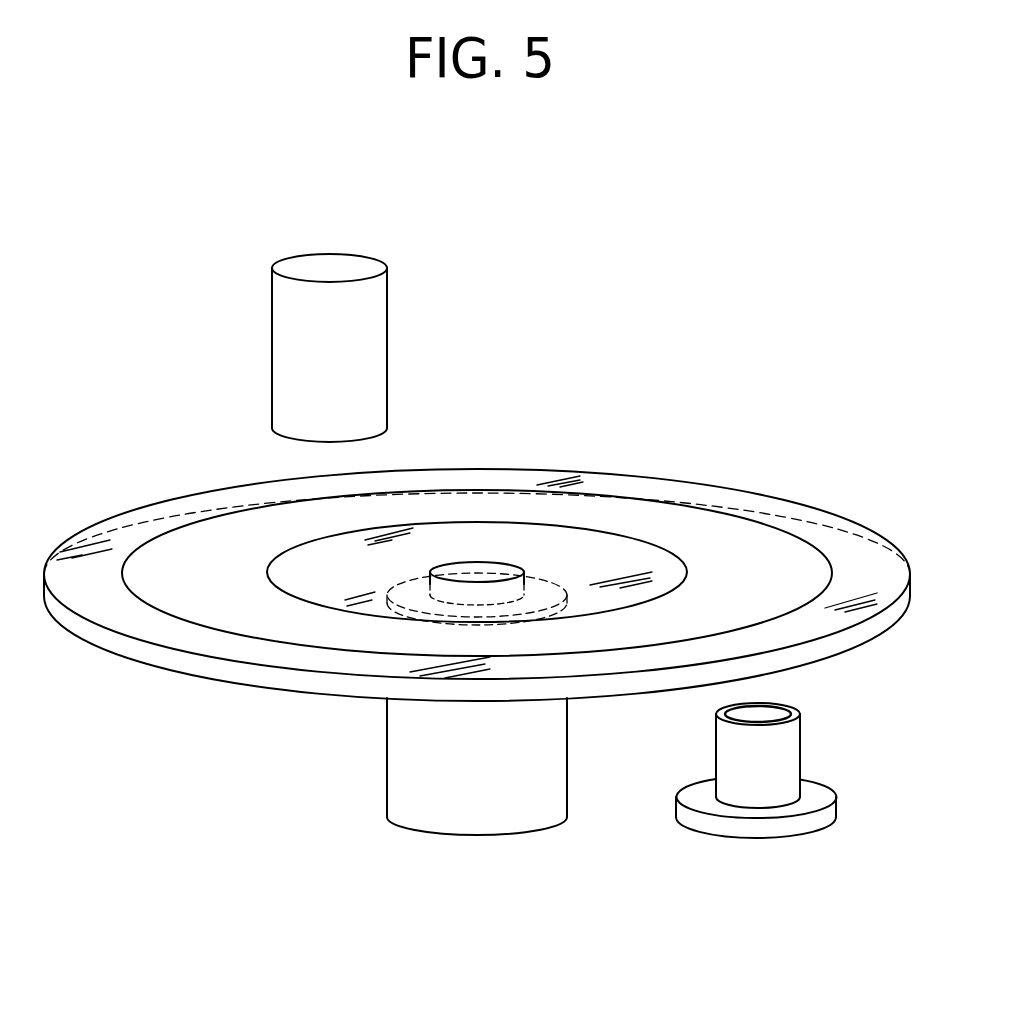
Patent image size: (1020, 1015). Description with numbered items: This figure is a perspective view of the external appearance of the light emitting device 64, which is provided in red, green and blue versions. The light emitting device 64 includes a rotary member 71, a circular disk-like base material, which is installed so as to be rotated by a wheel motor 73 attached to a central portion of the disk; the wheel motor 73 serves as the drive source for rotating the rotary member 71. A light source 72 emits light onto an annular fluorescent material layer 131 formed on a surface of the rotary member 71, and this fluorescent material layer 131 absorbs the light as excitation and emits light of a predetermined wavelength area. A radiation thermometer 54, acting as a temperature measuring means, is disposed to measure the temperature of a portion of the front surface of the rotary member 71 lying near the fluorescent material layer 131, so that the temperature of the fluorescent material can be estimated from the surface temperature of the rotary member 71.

The light emitting device 64 is at (737, 316).
The radiation thermometer 54 is at (298, 328).
The rotary member 71 is at (573, 470).
The fluorescent material layer 131 is at (647, 513).
The wheel motor 73 is at (470, 767).
The light source 72 is at (760, 780).